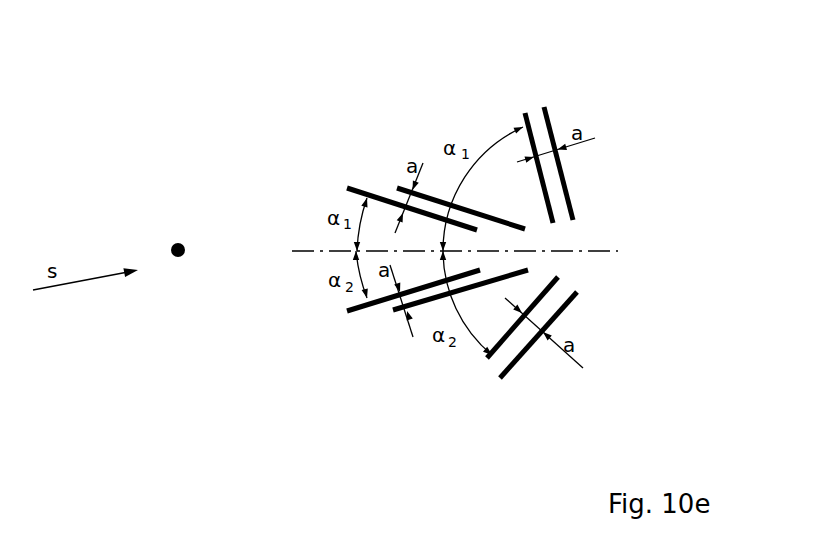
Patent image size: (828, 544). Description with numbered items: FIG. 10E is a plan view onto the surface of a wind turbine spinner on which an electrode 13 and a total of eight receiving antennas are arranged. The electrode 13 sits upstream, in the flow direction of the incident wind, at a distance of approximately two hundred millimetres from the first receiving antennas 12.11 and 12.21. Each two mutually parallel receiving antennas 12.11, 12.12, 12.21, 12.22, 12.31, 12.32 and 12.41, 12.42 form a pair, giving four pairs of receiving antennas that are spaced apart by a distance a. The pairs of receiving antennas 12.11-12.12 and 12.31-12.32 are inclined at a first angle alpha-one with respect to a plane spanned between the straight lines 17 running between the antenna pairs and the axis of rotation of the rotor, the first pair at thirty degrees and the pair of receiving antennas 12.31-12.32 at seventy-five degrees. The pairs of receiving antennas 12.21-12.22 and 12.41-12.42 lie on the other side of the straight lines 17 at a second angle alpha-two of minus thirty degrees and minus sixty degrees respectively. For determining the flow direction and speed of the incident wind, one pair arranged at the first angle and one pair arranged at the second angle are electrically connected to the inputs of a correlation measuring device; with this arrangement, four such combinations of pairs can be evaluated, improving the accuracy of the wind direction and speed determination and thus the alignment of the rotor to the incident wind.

The electrode 13 is at (182, 241).
The straight lines 17 is at (608, 248).
The receiving antenna 12.11 is at (347, 188).
The receiving antenna 12.12 is at (397, 190).
The receiving antenna 12.21 is at (347, 311).
The receiving antenna 12.22 is at (393, 310).
The receiving antenna 12.31 is at (525, 113).
The receiving antenna 12.32 is at (544, 107).
The receiving antenna 12.41 is at (487, 360).
The receiving antenna 12.42 is at (513, 365).